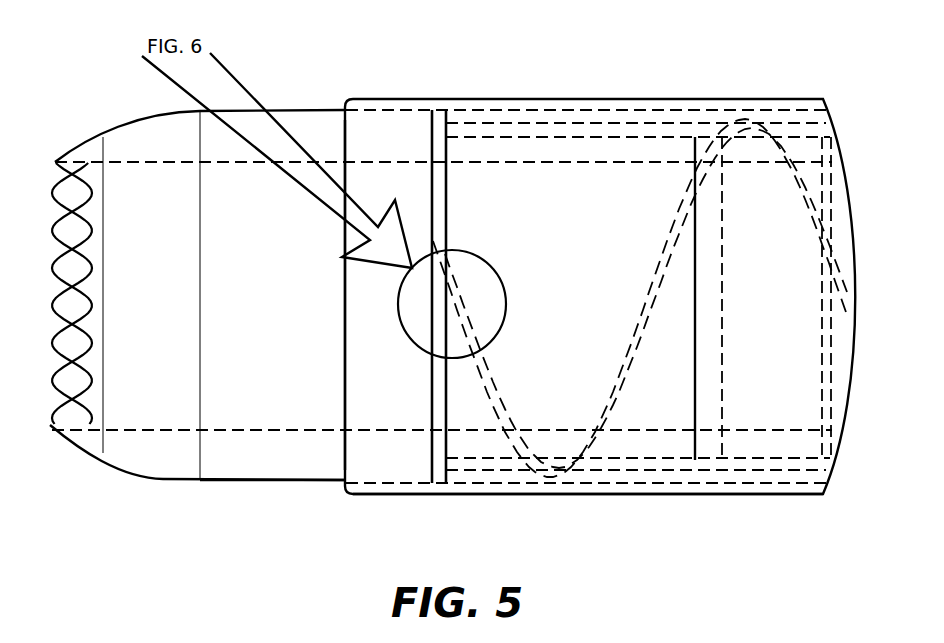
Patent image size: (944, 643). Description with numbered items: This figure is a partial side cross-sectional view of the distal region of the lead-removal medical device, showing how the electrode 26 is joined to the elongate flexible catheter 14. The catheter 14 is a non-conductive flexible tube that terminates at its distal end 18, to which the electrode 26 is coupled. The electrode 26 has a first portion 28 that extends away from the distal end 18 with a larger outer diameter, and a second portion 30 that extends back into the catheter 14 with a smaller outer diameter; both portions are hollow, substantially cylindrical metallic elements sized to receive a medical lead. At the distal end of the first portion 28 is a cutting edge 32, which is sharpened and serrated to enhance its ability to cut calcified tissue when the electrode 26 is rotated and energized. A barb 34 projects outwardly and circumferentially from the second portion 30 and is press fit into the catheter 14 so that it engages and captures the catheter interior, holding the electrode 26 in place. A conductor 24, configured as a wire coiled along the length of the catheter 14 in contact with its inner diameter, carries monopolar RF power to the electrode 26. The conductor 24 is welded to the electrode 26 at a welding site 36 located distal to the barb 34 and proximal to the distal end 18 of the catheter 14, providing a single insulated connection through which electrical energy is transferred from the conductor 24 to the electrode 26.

The elongate flexible catheter 14 is at (542, 99).
The distal end 18 is at (343, 130).
The conductor 24 is at (745, 120).
The electrode 26 is at (163, 479).
The first portion 28 is at (295, 480).
The second portion 30 is at (585, 495).
The cutting edge 32 is at (52, 425).
The barb 34 is at (700, 137).
The welding site 36 is at (433, 268).